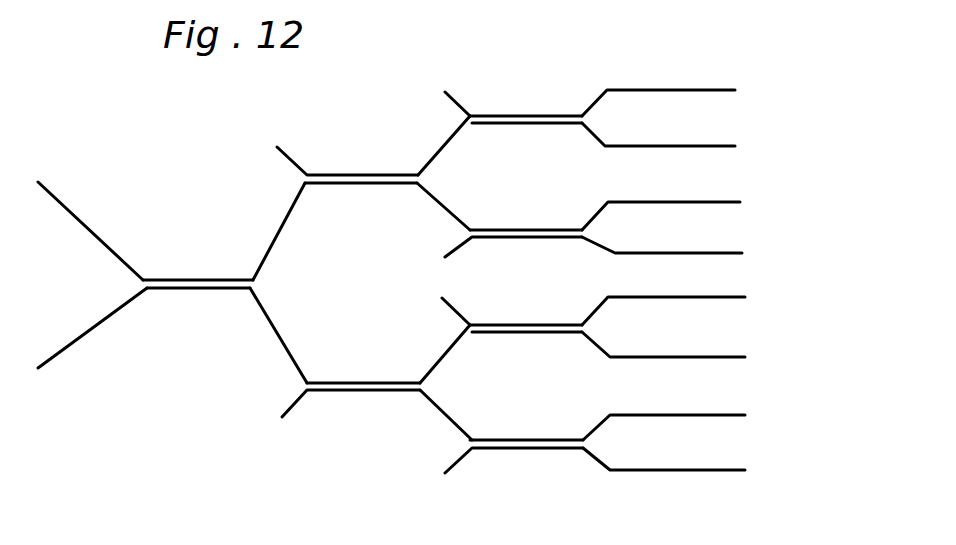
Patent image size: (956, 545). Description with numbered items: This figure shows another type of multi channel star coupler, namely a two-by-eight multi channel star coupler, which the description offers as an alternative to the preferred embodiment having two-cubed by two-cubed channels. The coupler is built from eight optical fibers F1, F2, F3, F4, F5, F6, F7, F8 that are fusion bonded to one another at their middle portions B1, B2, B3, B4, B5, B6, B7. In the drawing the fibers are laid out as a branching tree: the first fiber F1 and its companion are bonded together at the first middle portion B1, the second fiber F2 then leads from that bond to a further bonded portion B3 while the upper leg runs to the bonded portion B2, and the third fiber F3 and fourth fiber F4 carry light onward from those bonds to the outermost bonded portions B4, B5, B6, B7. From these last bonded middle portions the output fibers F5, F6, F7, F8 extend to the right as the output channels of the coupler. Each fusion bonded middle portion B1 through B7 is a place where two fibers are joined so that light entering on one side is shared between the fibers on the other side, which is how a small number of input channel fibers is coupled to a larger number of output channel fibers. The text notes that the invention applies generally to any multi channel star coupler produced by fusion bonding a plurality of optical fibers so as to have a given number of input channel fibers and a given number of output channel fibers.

The optical fiber F1 is at (72, 208).
The optical fiber F2 is at (267, 315).
The optical fiber F3 is at (435, 152).
The optical fiber F4 is at (435, 408).
The optical fiber F5 is at (650, 90).
The optical fiber F6 is at (655, 252).
The optical fiber F7 is at (657, 297).
The optical fiber F8 is at (670, 472).
The fusion bonded middle portion B1 is at (224, 275).
The fusion bonded middle portion B2 is at (354, 169).
The fusion bonded middle portion B3 is at (329, 397).
The fusion bonded middle portion B4 is at (506, 109).
The fusion bonded middle portion B5 is at (503, 224).
The fusion bonded middle portion B6 is at (513, 321).
The fusion bonded middle portion B7 is at (518, 432).